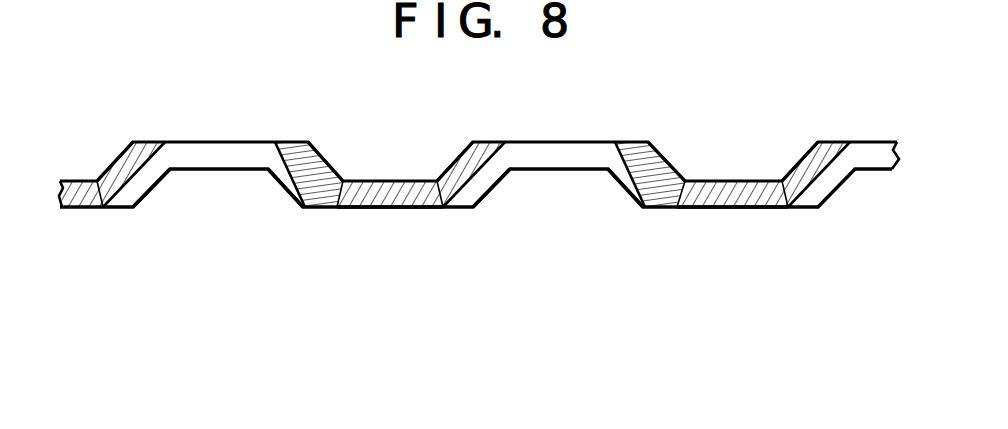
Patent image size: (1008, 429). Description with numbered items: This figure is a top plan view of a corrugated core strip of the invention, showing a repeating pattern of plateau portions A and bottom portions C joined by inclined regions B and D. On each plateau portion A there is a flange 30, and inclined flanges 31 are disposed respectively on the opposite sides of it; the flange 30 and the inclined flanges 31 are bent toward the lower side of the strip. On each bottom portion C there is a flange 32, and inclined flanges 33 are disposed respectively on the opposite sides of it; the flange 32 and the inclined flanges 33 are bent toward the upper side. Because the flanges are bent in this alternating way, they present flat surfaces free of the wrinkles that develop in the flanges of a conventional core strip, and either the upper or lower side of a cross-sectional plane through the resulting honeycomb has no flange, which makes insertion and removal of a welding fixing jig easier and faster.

The flange 30 is at (218, 166).
The inclined flanges 31 is at (293, 186).
The flange 32 is at (386, 180).
The inclined flanges 33 is at (667, 160).
The plateau portion A is at (220, 141).
The inclined region B is at (305, 208).
The bottom portion C is at (386, 208).
The lower flat end region D is at (100, 183).